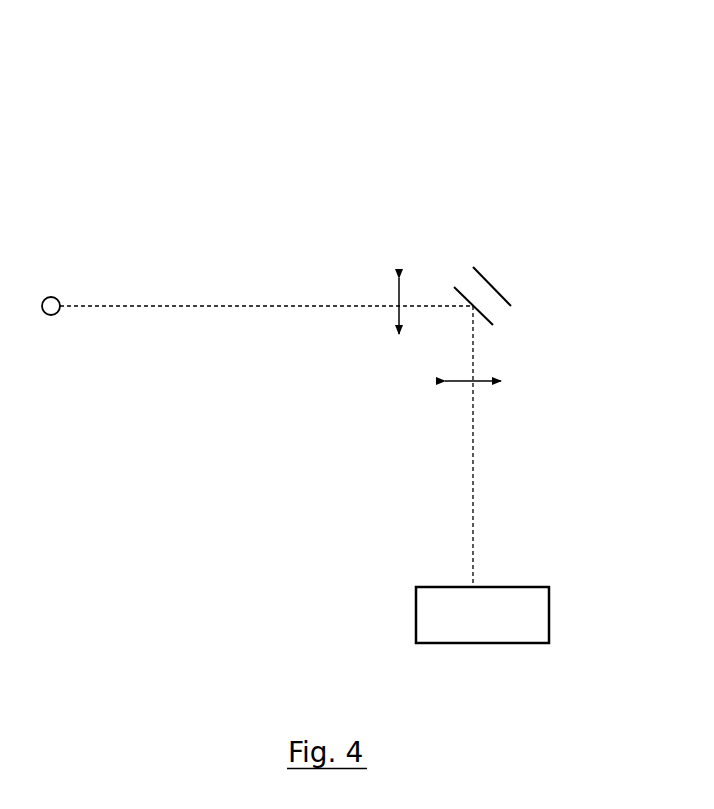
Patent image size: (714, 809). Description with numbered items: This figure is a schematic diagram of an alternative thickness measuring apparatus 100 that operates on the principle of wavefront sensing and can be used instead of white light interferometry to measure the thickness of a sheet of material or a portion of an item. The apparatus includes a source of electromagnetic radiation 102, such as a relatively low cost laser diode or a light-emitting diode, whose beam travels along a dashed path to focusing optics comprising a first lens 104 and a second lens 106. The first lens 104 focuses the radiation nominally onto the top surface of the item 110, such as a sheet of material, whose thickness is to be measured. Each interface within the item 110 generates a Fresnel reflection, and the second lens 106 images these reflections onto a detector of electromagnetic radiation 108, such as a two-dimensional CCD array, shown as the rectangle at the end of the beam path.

The alternative thickness measuring apparatus 100 is at (226, 158).
The source of electromagnetic radiation 102 is at (58, 286).
The first lens 104 is at (413, 261).
The second lens 106 is at (498, 363).
The detector of electromagnetic radiation 108 is at (502, 603).
The item 110 is at (493, 280).